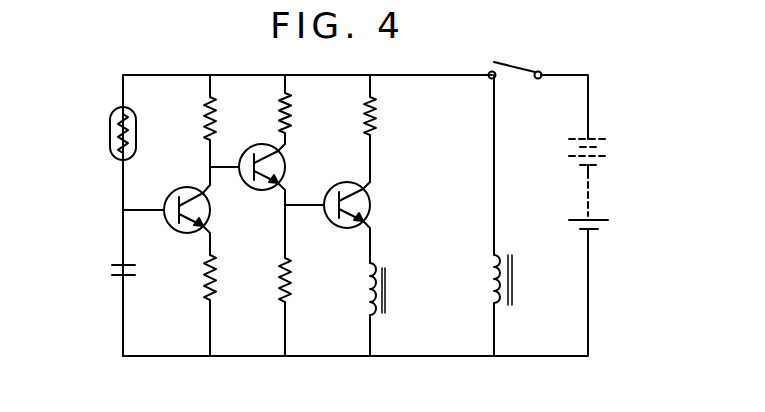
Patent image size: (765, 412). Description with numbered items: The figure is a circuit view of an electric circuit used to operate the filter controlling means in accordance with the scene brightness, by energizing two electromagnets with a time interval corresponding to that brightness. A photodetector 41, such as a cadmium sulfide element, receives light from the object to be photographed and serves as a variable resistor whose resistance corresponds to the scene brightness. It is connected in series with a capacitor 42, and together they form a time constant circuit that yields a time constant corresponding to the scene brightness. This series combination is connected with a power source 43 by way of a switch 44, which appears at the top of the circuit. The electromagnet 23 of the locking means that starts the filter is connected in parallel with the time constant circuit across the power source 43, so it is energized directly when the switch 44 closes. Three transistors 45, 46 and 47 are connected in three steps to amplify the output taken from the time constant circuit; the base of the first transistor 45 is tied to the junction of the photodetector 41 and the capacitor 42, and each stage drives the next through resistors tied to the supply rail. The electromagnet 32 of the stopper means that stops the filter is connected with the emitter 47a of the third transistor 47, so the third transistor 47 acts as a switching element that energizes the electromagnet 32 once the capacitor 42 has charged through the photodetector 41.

The photodetector 41 is at (110, 132).
The capacitor 42 is at (112, 268).
The power source 43 is at (610, 152).
The switch 44 is at (520, 73).
The first transistor 45 is at (185, 233).
The second transistor 46 is at (261, 190).
The third transistor 47 is at (358, 170).
The emitter 47a is at (349, 211).
The electromagnet 32 is at (388, 273).
The electromagnet 23 is at (492, 281).